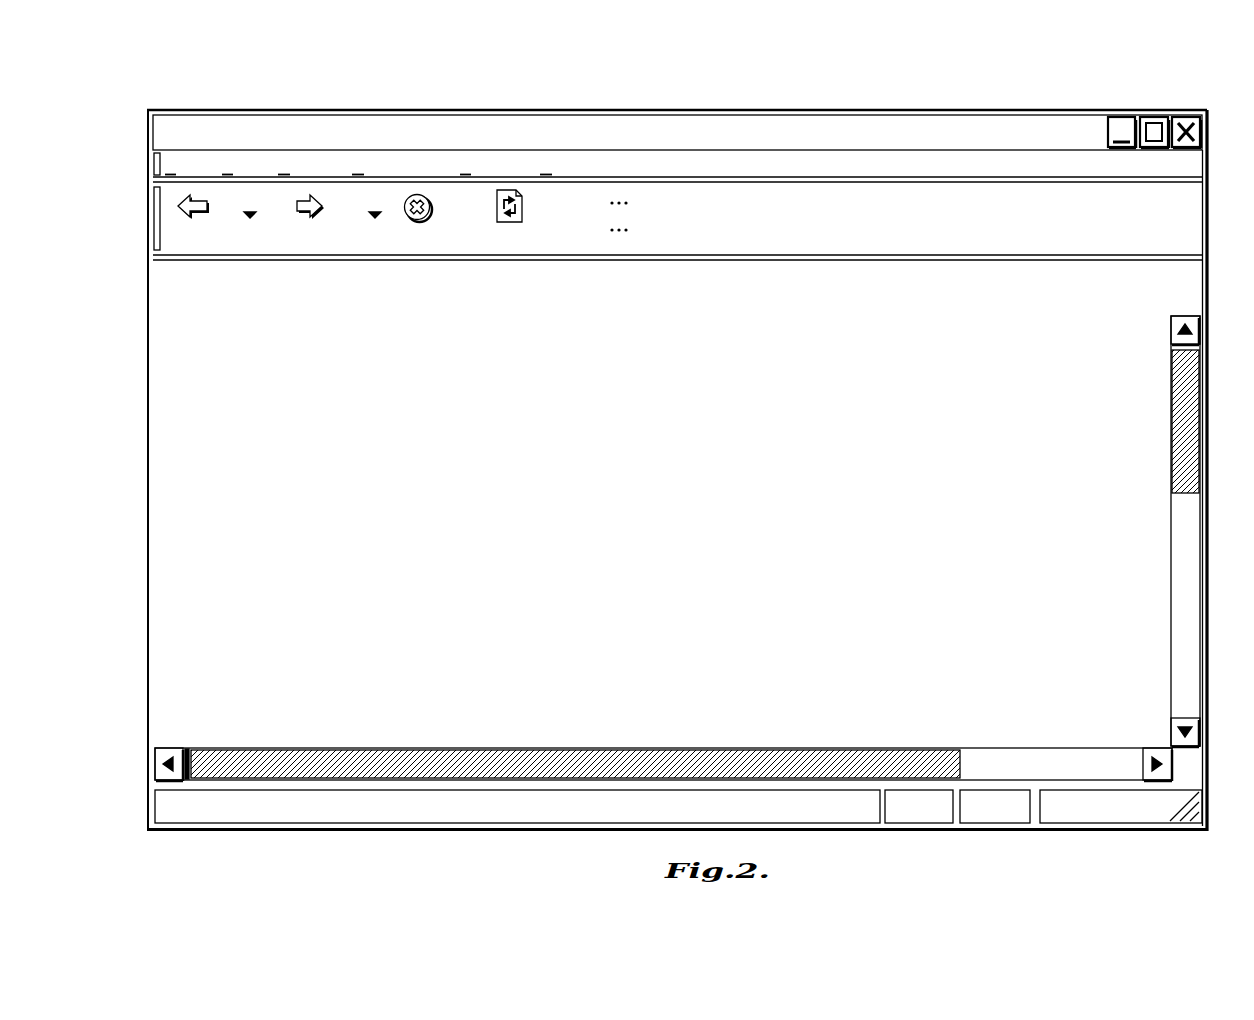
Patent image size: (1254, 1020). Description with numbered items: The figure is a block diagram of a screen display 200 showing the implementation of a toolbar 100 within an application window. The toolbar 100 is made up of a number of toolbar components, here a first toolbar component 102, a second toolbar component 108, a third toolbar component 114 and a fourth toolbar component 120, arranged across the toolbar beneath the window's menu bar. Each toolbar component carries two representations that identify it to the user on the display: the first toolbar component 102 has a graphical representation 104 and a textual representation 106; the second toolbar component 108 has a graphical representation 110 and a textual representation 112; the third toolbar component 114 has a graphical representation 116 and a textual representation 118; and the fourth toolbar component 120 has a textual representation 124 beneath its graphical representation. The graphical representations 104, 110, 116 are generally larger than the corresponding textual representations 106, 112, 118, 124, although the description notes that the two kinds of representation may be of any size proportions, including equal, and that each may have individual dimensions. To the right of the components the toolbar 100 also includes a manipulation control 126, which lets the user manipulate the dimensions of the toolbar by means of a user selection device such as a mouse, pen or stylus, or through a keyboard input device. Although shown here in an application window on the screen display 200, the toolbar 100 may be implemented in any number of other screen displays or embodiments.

The toolbar 100 is at (148, 231).
The toolbar component 102 is at (152, 258).
The graphical representation 104 is at (210, 205).
The textual representation 106 is at (181, 260).
The toolbar component 108 is at (268, 257).
The graphical representation 110 is at (323, 203).
The textual representation 112 is at (287, 262).
The toolbar component 114 is at (387, 257).
The graphical representation 116 is at (430, 197).
The textual representation 118 is at (419, 237).
The toolbar component 120 is at (520, 200).
The textual representation 124 is at (500, 236).
The manipulation control 126 is at (620, 240).
The screen display 200 is at (203, 728).